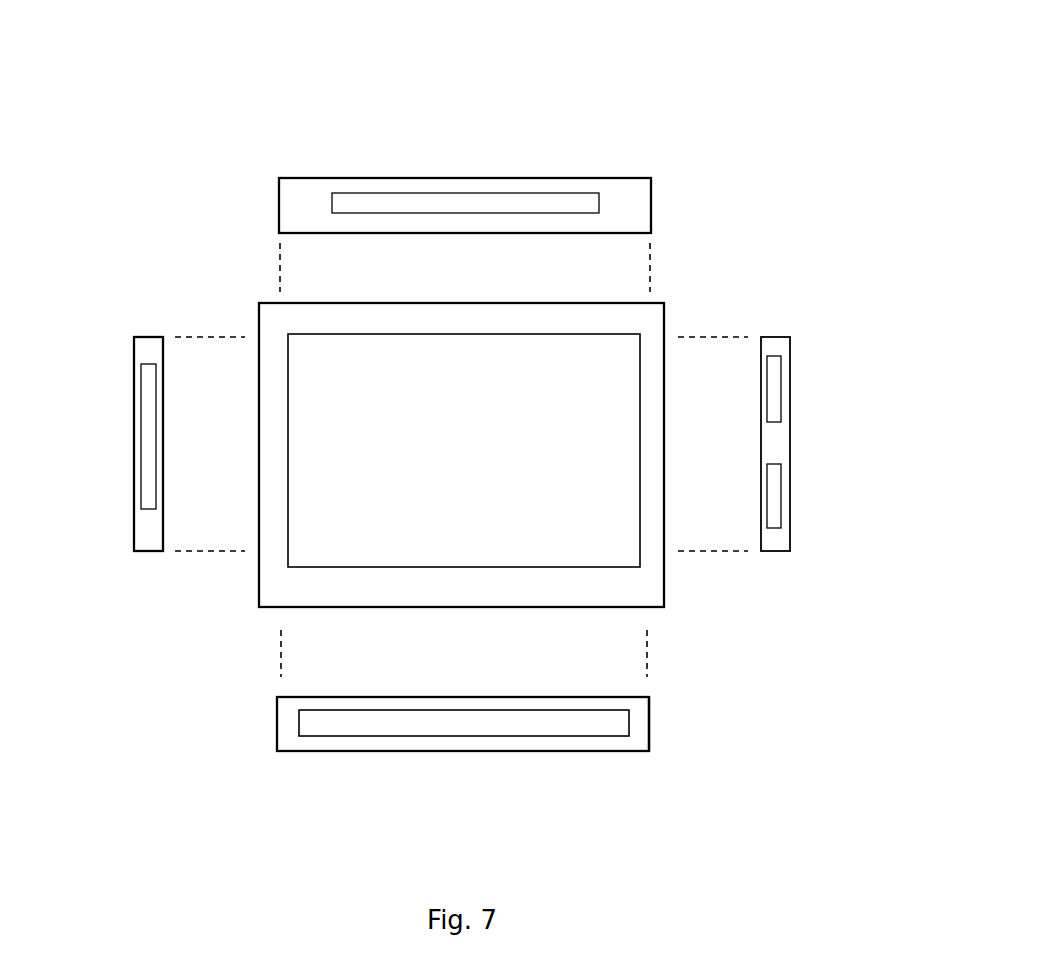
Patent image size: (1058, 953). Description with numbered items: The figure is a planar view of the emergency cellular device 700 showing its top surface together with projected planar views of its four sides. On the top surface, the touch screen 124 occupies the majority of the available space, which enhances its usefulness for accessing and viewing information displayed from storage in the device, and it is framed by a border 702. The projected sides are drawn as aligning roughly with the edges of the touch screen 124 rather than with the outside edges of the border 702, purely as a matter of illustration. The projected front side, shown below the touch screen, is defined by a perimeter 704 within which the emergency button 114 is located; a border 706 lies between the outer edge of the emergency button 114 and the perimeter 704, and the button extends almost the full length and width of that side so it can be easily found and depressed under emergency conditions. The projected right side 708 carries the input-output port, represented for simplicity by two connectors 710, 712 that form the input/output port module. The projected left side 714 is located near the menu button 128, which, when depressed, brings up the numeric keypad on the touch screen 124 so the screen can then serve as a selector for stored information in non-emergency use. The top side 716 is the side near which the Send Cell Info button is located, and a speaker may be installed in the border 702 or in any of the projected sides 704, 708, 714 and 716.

The electronic device assembly 700 is at (803, 108).
The border 702 is at (277, 322).
The touch screen 124 is at (557, 397).
The top side 716 is at (302, 194).
The menu button 128 is at (460, 197).
The projected left side 714 is at (153, 528).
The projected right side 708 is at (778, 446).
The connector 710 is at (778, 398).
The connector 712 is at (778, 501).
The perimeter 704 is at (277, 712).
The border 706 is at (640, 733).
The emergency button 114 is at (588, 723).